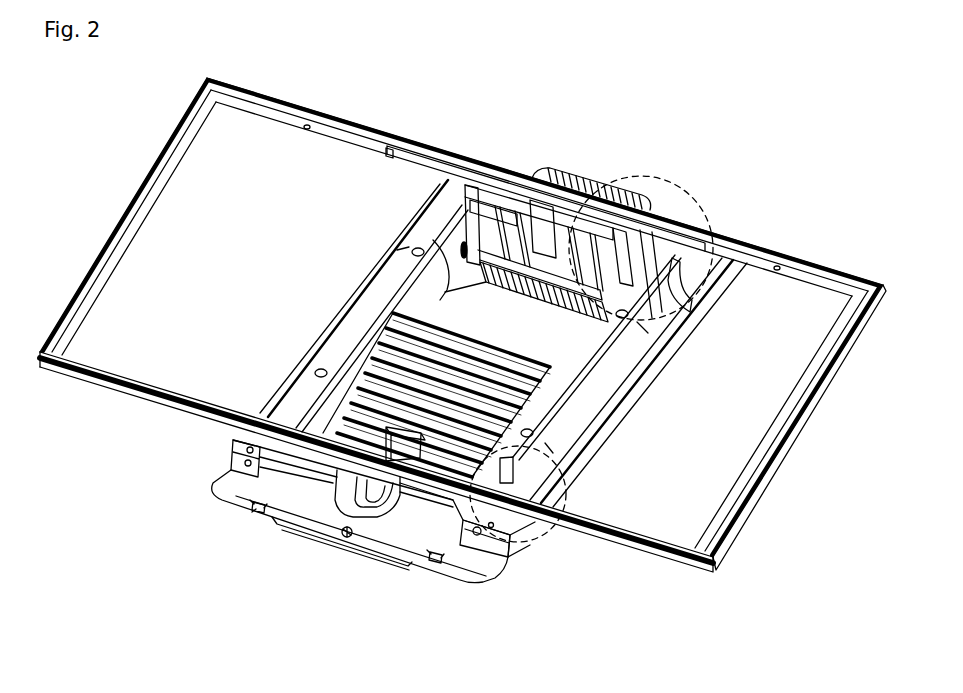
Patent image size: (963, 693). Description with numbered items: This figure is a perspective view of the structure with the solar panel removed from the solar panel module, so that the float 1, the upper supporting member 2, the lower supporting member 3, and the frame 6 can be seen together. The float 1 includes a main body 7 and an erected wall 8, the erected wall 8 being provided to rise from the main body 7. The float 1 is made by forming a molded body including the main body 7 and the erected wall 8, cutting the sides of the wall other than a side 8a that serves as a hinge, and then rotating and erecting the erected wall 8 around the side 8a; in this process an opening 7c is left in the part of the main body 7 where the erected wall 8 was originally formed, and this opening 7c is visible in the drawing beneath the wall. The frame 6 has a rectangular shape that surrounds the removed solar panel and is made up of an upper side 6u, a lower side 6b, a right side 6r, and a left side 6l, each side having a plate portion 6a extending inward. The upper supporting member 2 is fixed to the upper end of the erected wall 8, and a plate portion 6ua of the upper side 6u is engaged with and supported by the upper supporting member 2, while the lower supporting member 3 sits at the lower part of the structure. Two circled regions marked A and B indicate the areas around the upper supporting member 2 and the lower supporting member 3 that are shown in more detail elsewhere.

The float 1 is at (346, 264).
The upper supporting member 2 is at (420, 160).
The lower supporting member 3 is at (230, 438).
The frame 6 is at (232, 68).
The upper side 6u is at (273, 97).
The plate portion 6ua is at (532, 199).
The plate portion 6a is at (253, 107).
The left side 6l is at (120, 220).
The right side 6r is at (743, 528).
The lower side 6b is at (606, 531).
The main body 7 is at (310, 322).
The opening 7c is at (540, 341).
The erected wall 8 is at (463, 218).
The side 8a is at (503, 297).
The region A is at (641, 227).
The region B is at (518, 507).